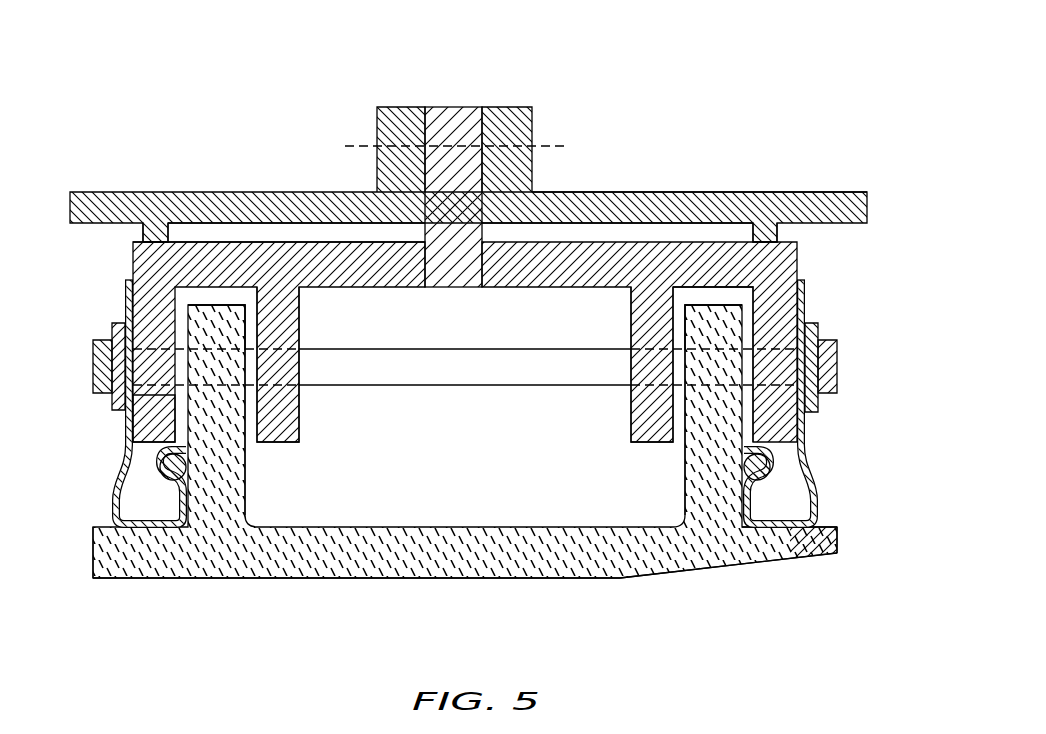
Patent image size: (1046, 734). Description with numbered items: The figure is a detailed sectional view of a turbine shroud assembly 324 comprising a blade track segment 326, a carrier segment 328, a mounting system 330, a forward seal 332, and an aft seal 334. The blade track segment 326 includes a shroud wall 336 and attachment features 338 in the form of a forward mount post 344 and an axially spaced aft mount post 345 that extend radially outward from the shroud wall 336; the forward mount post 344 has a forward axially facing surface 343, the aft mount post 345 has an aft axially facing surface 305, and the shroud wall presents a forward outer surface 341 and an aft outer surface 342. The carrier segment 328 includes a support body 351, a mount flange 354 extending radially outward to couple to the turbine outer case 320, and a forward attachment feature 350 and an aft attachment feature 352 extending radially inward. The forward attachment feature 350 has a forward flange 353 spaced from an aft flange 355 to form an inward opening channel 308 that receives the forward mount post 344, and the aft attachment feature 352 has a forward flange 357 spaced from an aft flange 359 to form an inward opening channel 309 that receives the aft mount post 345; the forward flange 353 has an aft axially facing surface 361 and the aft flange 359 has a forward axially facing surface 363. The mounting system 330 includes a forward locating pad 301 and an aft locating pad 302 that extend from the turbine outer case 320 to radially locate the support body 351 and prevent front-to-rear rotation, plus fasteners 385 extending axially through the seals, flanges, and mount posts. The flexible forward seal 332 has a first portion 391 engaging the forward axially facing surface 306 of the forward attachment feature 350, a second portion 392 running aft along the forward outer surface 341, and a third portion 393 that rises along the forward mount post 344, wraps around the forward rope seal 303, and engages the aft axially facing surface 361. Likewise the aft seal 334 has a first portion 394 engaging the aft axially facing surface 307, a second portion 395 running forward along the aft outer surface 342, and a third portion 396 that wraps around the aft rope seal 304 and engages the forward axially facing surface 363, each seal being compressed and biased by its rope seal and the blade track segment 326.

The forward locating pad 301 is at (155, 232).
The aft locating pad 302 is at (766, 232).
The forward rope seal 303 is at (163, 490).
The aft rope seal 304 is at (752, 467).
The aft axially facing surface 305 is at (743, 313).
The forward axially facing surface 306 is at (130, 393).
The aft axially facing surface 307 is at (798, 440).
The inward opening channel 308 is at (217, 295).
The inward opening channel 309 is at (720, 295).
The turbine outer case 320 is at (845, 192).
The turbine shroud assembly 324 is at (818, 113).
The blade track segment 326 is at (782, 580).
The carrier segment 328 is at (633, 222).
The mounting system 330 is at (560, 117).
The forward seal 332 is at (118, 472).
The aft seal 334 is at (818, 497).
The shroud wall 336 is at (825, 540).
The attachment features 338 is at (276, 497).
The forward outer surface 341 is at (103, 521).
The aft outer surface 342 is at (818, 524).
The forward axially facing surface 343 is at (188, 327).
The forward mount post 344 is at (218, 505).
The aft mount post 345 is at (712, 505).
The forward attachment feature 350 is at (232, 222).
The support body 351 is at (330, 260).
The aft attachment feature 352 is at (722, 222).
The forward flange 353 is at (126, 290).
The mount flange 354 is at (460, 107).
The aft flange 355 is at (290, 417).
The forward flange 357 is at (645, 420).
The aft flange 359 is at (780, 392).
The aft axially facing surface 361 is at (178, 400).
The forward axially facing surface 363 is at (748, 400).
The fasteners 385 is at (833, 350).
The first portion 391 is at (116, 318).
The second portion 392 is at (138, 532).
The third portion 393 is at (165, 503).
The first portion 394 is at (818, 320).
The second portion 395 is at (795, 553).
The third portion 396 is at (765, 503).